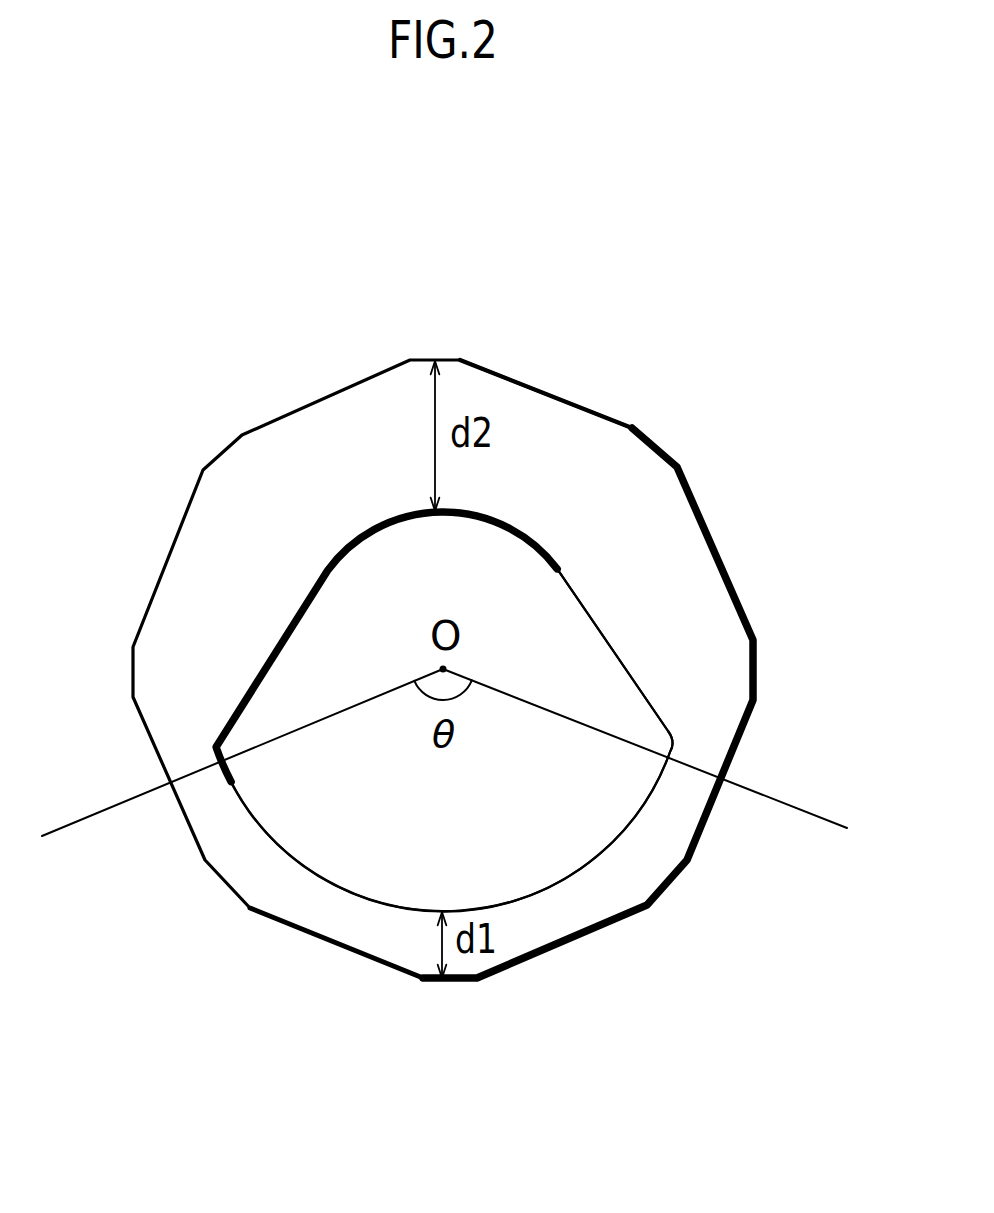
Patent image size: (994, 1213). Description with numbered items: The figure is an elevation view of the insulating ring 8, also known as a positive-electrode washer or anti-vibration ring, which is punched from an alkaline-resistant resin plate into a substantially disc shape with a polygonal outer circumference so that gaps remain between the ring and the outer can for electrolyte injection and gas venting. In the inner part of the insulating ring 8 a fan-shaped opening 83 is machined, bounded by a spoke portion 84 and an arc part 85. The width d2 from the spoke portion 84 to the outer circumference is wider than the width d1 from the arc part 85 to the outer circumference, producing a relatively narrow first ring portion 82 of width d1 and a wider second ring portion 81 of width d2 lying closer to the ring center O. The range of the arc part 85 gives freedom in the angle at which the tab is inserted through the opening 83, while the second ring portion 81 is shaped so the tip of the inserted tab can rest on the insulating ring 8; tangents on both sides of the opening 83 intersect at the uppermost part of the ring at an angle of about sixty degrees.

The insulating ring 8 is at (509, 672).
The second ring portion 81 is at (505, 400).
The first ring portion 82 is at (547, 933).
The fan-shaped opening 83 is at (567, 648).
The spoke portion 84 is at (495, 507).
The arc part 85 is at (633, 822).